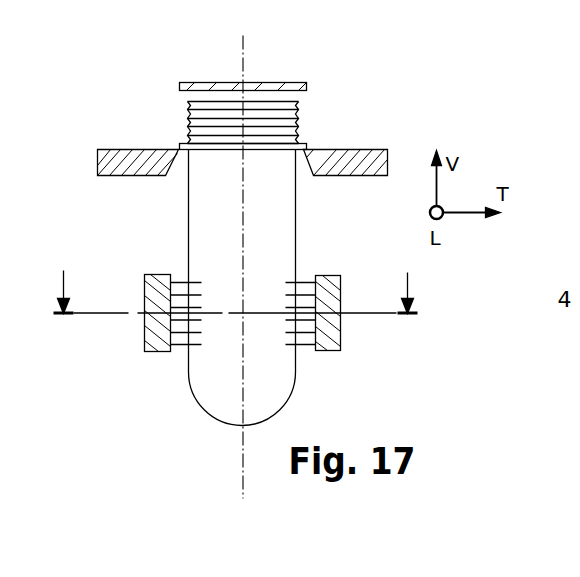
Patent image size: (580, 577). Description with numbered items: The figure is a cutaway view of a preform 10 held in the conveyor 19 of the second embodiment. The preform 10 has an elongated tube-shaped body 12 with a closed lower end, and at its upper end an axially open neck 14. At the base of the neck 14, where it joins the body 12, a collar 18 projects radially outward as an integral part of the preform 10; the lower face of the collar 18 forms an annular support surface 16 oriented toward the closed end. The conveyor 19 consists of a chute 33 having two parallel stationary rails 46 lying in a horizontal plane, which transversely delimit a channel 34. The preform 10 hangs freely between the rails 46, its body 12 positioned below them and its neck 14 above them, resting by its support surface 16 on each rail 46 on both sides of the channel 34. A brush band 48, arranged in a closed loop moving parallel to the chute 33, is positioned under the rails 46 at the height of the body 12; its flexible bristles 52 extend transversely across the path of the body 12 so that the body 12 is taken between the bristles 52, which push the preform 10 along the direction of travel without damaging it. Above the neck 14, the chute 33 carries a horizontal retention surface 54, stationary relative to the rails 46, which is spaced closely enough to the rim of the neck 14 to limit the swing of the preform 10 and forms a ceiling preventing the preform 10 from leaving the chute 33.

The preform 10 is at (213, 425).
The body 12 is at (282, 208).
The neck 14 is at (290, 113).
The support surface 16 is at (229, 152).
The collar 18 is at (302, 145).
The conveyor 19 is at (377, 93).
The chute 33 is at (130, 142).
The channel 34 is at (180, 168).
The rails 46 is at (100, 161).
The brush band 48 is at (152, 292).
The flexible bristles 52 is at (183, 347).
The retention surface 54 is at (178, 87).